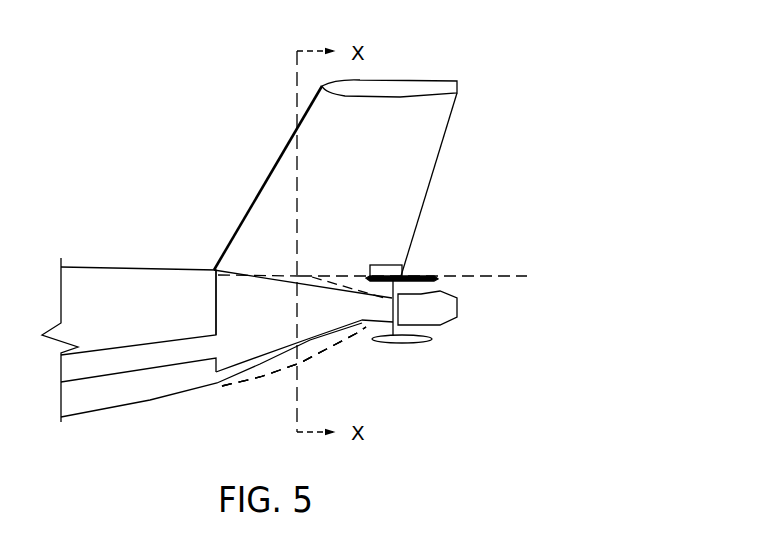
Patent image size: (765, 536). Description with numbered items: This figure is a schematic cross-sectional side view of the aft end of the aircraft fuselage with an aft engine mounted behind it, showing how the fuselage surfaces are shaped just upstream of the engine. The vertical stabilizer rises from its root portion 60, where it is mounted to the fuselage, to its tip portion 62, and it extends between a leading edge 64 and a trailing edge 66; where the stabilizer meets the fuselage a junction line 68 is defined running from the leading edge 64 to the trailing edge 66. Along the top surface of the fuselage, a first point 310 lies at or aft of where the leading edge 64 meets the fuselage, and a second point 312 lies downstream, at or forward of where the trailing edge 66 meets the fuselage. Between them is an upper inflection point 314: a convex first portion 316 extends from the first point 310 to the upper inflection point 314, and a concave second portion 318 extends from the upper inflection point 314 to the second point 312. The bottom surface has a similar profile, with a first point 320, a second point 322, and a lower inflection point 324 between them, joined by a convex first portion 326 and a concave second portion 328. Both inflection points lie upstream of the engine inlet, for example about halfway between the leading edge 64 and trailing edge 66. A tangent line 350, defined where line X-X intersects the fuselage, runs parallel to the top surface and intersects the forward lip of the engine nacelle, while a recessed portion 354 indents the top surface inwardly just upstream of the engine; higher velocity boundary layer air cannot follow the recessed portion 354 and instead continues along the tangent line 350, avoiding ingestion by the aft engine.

The root portion 60 is at (279, 297).
The tip portion 62 is at (429, 70).
The leading edge 64 is at (249, 192).
The trailing edge 66 is at (449, 127).
The junction line 68 is at (268, 283).
The first point 310 is at (207, 260).
The second point 312 is at (407, 283).
The upper inflection point 314 is at (289, 265).
The first portion 316 is at (262, 265).
The second portion 318 is at (362, 275).
The first point 320 is at (200, 394).
The second point 322 is at (399, 342).
The lower inflection point 324 is at (304, 369).
The convex first portion 326 is at (242, 389).
The concave second portion 328 is at (363, 345).
The tangent line 350 is at (499, 273).
The recessed portion 354 is at (380, 267).